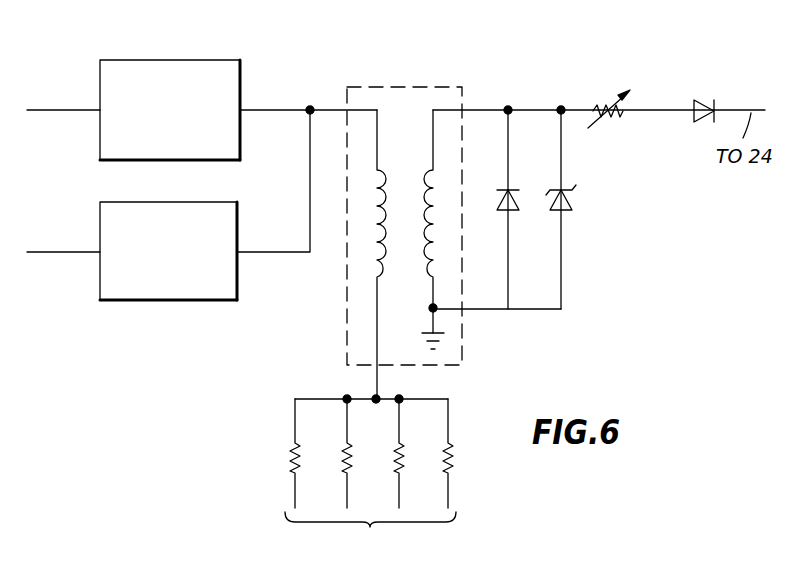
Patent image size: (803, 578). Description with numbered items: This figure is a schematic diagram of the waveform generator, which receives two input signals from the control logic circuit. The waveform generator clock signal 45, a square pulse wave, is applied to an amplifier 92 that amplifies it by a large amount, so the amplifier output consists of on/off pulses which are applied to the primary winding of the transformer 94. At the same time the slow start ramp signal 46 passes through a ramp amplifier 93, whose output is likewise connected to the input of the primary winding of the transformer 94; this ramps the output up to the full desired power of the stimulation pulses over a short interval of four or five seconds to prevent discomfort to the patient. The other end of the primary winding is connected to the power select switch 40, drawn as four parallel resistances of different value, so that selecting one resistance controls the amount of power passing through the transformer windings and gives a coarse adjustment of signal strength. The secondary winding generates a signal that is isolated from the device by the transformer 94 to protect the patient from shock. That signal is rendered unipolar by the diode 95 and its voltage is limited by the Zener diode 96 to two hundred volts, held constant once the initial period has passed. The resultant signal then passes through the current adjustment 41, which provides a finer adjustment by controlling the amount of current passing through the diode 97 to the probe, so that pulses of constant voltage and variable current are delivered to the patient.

The amplifier 92 is at (209, 62).
The ramp amplifier 93 is at (223, 222).
The waveform generator clock signal 45 is at (74, 110).
The slow start ramp signal 46 is at (69, 254).
The transformer 94 is at (440, 79).
The diode 95 is at (514, 209).
The Zener diode 96 is at (573, 196).
The current adjustment 41 is at (601, 108).
The diode 97 is at (704, 97).
The power select switch 40 is at (370, 477).